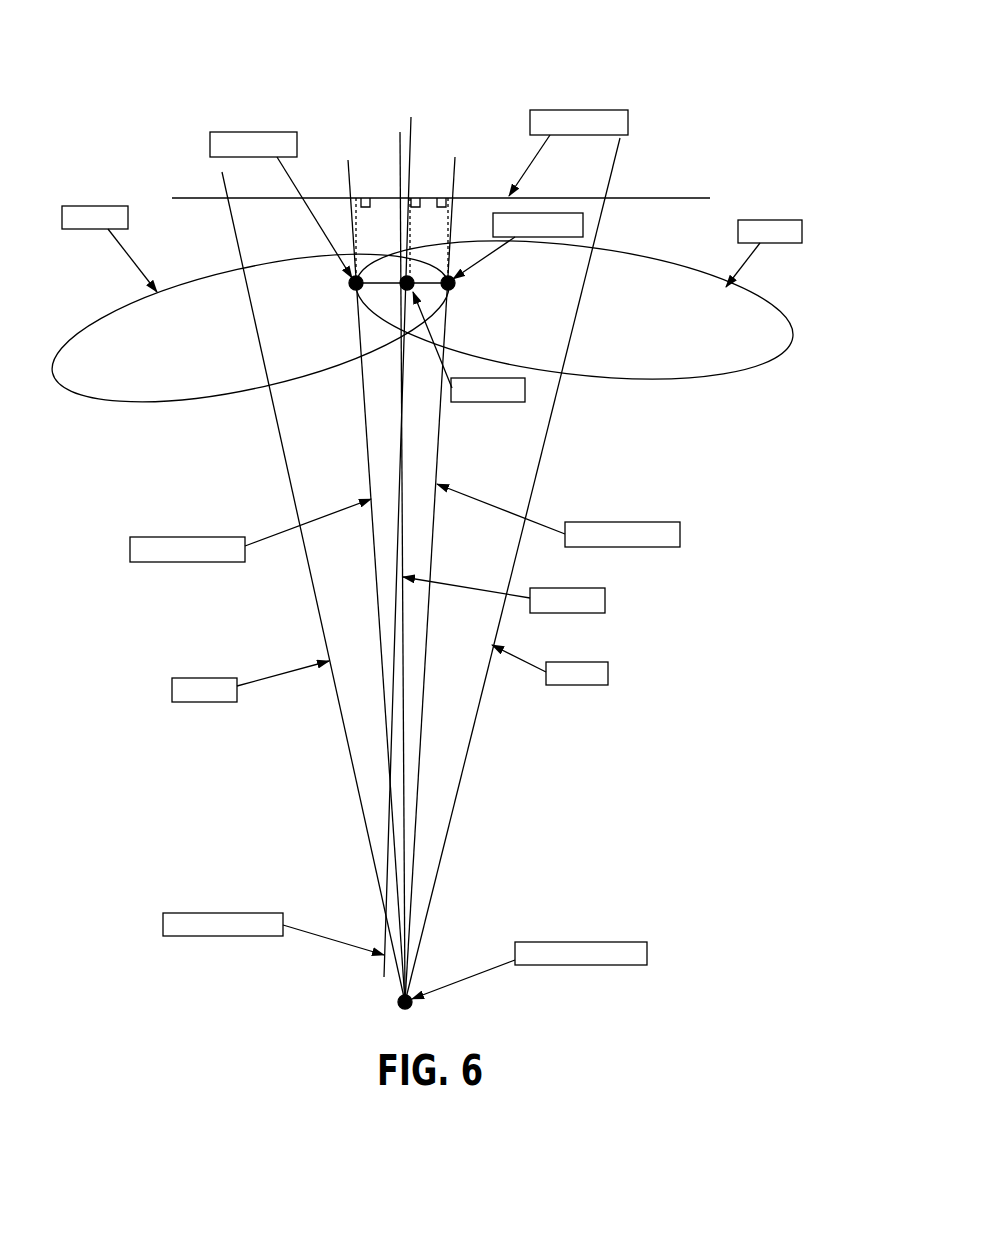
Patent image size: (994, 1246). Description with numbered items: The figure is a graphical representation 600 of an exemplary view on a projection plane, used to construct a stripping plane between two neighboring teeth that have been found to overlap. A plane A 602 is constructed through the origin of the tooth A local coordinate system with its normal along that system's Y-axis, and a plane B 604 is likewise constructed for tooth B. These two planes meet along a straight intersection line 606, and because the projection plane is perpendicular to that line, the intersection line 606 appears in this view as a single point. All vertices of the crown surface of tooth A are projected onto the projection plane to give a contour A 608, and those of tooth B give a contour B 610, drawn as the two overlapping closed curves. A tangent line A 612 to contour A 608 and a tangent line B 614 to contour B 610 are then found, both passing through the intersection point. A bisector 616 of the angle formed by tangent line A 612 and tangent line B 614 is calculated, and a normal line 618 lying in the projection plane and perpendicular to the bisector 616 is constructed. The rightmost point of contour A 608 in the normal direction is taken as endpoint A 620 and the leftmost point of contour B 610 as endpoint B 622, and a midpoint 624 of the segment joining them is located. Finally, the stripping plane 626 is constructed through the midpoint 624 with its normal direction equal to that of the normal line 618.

The graphical representation of a view on a projection plane 600 is at (689, 77).
The plane A 602 is at (200, 702).
The plane B 604 is at (575, 685).
The intersection line 606 is at (647, 953).
The contour A 608 is at (78, 229).
The contour B 610 is at (792, 243).
The tangent line A 612 is at (180, 562).
The tangent line B 614 is at (680, 535).
The bisector 616 is at (605, 607).
The normal line 618 is at (628, 123).
The endpoint A 620 is at (583, 225).
The endpoint B 622 is at (210, 148).
The midpoint 624 is at (505, 402).
The stripping plane 626 is at (163, 924).